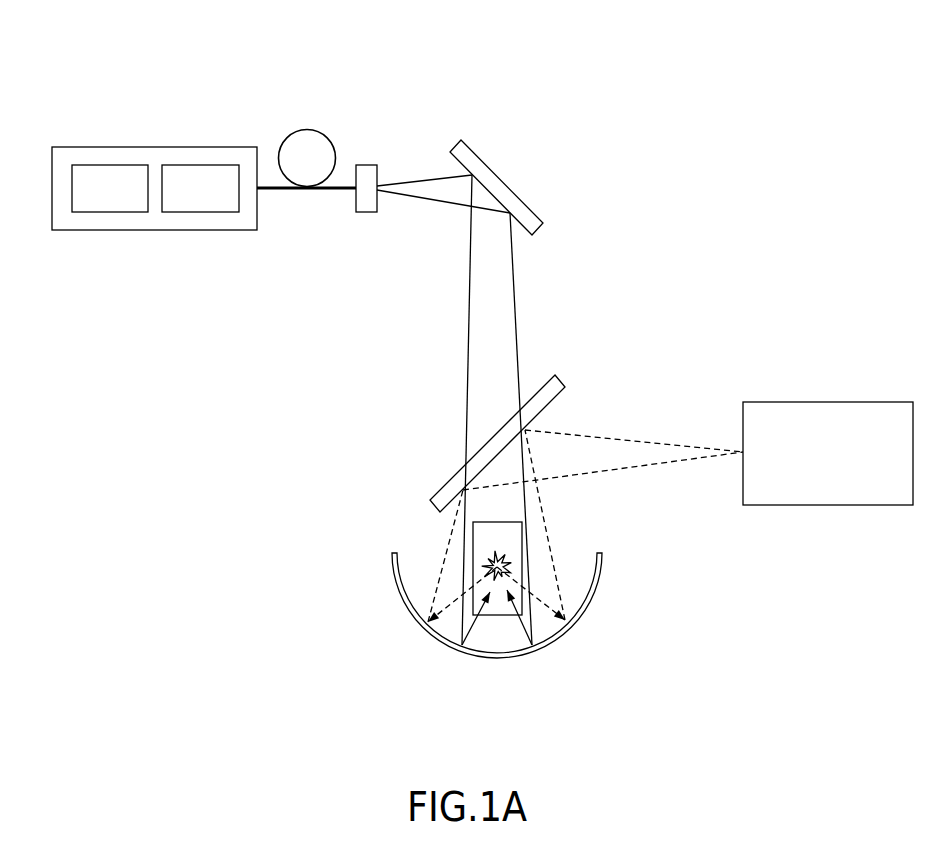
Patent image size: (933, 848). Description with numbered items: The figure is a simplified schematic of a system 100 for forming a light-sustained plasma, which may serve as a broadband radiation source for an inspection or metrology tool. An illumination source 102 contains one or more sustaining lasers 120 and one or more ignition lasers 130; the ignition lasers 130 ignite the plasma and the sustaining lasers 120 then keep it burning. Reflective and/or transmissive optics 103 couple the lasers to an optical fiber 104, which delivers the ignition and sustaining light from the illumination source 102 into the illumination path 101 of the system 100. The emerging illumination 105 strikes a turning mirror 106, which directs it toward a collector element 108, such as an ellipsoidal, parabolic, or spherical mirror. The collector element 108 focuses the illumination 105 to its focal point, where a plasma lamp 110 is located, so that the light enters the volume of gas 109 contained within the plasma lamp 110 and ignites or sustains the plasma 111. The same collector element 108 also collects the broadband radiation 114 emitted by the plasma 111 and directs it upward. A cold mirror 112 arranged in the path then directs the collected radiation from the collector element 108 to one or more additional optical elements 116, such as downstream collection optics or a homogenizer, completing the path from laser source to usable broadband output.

The system for forming a light-sustained plasma 100 is at (115, 72).
The illumination path 101 is at (393, 282).
The illumination source 102 is at (108, 147).
The sustaining laser 120 is at (110, 188).
The ignition laser 130 is at (200, 188).
The reflective and/or transmissive optics 103 is at (367, 165).
The optical fiber 104 is at (305, 130).
The illumination 105 is at (437, 203).
The turning mirror 106 is at (502, 180).
The collector element 108 is at (432, 635).
The volume of gas 109 is at (487, 535).
The plasma lamp 110 is at (497, 520).
The plasma 111 is at (493, 558).
The cold mirror 112 is at (437, 493).
The broadband radiation 114 is at (548, 543).
The additional optical elements 116 is at (828, 453).